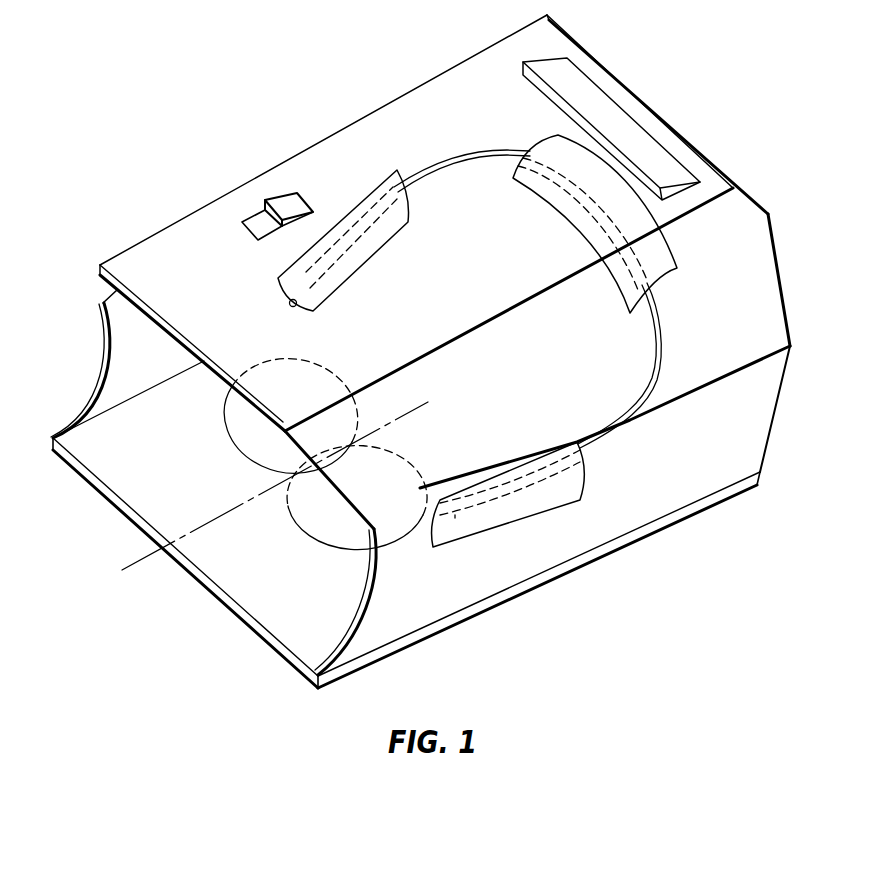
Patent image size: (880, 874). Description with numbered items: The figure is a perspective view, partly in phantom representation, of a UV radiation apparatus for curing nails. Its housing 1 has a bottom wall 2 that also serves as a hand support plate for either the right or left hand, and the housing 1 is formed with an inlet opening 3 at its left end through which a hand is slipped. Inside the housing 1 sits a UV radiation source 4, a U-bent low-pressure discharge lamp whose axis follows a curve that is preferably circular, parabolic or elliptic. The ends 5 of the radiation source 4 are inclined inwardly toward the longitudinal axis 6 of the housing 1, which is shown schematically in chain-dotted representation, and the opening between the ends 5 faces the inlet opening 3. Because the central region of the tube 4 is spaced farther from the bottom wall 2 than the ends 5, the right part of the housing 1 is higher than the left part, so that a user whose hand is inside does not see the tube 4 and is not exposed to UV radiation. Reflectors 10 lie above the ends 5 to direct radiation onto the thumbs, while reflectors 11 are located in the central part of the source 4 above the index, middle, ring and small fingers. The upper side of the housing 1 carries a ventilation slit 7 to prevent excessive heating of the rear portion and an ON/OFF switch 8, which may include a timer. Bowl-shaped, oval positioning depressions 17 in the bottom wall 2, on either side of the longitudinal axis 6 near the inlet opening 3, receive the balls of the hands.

The housing 1 is at (777, 442).
The bottom wall 2 is at (310, 648).
The inlet opening 3 is at (137, 397).
The UV radiation source 4 is at (613, 437).
The ends of the radiation source 5 is at (289, 304).
The longitudinal axis 6 is at (143, 558).
The ventilation slit 7 is at (603, 107).
The ON/OFF switch 8 is at (280, 197).
The reflectors 10 is at (368, 183).
The reflectors 11 is at (658, 256).
The positioning depressions 17 is at (232, 460).